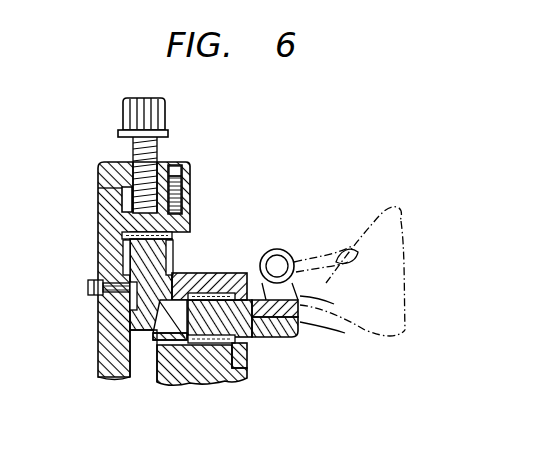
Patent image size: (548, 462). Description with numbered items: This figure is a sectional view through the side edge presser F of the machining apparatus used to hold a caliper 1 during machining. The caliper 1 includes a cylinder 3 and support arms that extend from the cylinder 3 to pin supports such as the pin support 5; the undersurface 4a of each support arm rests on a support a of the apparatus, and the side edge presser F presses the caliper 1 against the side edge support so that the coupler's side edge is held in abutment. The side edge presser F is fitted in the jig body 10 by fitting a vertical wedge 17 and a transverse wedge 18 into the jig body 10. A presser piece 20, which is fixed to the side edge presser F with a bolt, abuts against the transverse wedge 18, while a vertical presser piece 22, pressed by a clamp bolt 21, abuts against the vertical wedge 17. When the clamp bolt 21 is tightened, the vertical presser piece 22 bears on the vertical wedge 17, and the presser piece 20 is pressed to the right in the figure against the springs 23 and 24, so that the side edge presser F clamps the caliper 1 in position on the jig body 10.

The caliper 1 is at (393, 210).
The cylinder 3 is at (370, 216).
The pin support 5 is at (284, 251).
The support a is at (301, 271).
The side edge presser F is at (334, 305).
The undersurface of support arm 4a is at (273, 338).
The jig body 10 is at (226, 272).
The vertical wedge 17 is at (128, 319).
The transverse wedge 18 is at (160, 345).
The presser piece 20 is at (259, 343).
The clamp bolt 21 is at (168, 122).
The vertical presser piece 22 is at (181, 214).
The spring 23 is at (173, 262).
The spring 24 is at (224, 372).